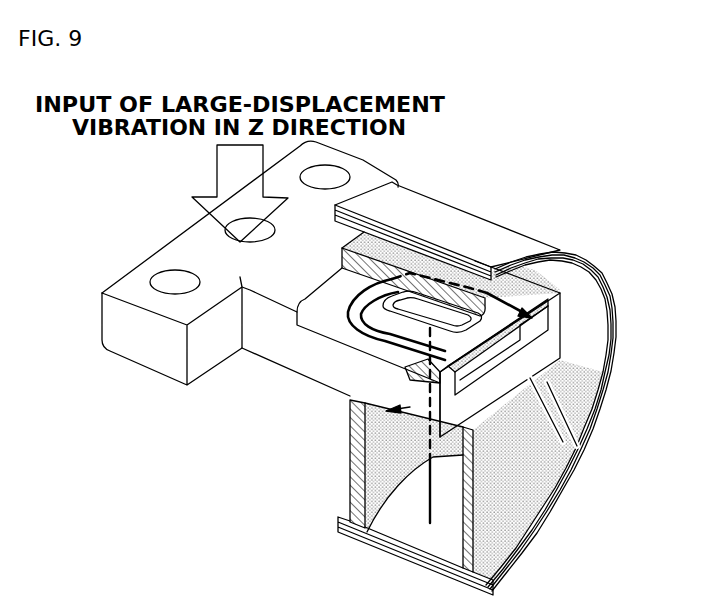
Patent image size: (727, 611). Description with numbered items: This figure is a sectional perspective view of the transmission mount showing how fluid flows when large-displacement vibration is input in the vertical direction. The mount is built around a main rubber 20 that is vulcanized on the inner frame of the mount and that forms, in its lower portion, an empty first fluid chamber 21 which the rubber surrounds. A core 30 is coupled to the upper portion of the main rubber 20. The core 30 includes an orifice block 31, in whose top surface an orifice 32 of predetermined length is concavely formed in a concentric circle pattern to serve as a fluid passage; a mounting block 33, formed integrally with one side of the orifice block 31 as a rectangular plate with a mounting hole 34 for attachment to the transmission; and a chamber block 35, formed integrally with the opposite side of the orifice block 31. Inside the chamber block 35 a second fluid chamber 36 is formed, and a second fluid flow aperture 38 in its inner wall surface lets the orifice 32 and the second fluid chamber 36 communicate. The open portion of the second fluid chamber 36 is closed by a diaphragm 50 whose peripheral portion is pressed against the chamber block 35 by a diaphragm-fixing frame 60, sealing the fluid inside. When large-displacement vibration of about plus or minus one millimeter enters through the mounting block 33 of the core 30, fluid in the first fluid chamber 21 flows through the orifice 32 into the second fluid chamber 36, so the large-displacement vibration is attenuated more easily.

The main rubber 20 is at (545, 455).
The first fluid chamber 21 is at (410, 515).
The core 30 is at (148, 240).
The orifice block 31 is at (283, 348).
The orifice 32 is at (334, 320).
The mounting block 33 is at (135, 345).
The mounting hole 34 is at (160, 280).
The chamber block 35 is at (353, 456).
The second fluid chamber 36 is at (500, 292).
The second fluid flow aperture 38 is at (530, 340).
The diaphragm 50 is at (532, 350).
The diaphragm-fixing frame 60 is at (560, 358).